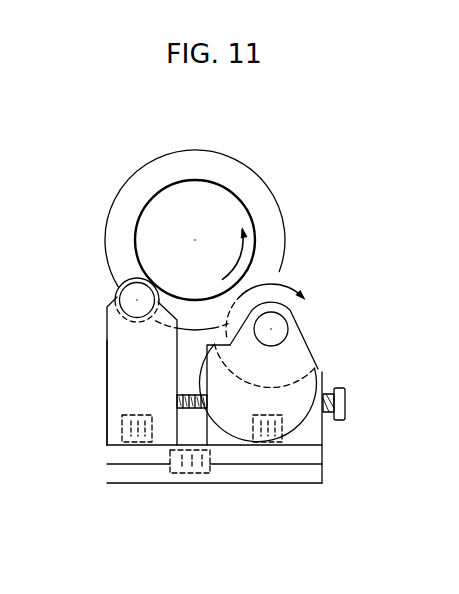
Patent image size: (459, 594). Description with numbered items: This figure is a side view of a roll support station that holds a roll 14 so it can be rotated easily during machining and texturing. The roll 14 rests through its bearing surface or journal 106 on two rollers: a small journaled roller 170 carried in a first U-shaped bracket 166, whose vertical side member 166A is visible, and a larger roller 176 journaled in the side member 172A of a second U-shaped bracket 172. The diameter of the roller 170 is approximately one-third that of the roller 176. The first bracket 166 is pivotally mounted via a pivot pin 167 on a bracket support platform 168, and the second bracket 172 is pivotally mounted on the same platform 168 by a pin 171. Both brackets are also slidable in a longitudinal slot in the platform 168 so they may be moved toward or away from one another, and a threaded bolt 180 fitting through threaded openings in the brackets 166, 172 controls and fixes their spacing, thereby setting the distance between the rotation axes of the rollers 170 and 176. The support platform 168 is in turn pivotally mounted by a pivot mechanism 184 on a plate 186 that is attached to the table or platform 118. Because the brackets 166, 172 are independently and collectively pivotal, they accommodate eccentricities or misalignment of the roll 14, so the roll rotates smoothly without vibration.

The roll 14 is at (248, 182).
The journal 106 is at (248, 215).
The journaled roller 170 is at (115, 295).
The first U-shaped bracket 166 is at (110, 342).
The side member 166A is at (115, 387).
The threaded bolt 180 is at (177, 389).
The pivot pin 167 is at (121, 422).
The pivot mechanism 184 is at (170, 451).
The roller 176 is at (307, 313).
The second U-shaped bracket 172 is at (322, 368).
The side member 172A is at (323, 377).
The pin 171 is at (285, 425).
The bracket support platform 168 is at (323, 440).
The plate 186 is at (323, 457).
The table or platform 118 is at (323, 477).